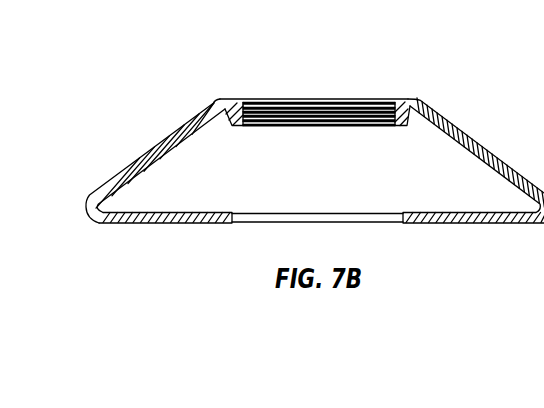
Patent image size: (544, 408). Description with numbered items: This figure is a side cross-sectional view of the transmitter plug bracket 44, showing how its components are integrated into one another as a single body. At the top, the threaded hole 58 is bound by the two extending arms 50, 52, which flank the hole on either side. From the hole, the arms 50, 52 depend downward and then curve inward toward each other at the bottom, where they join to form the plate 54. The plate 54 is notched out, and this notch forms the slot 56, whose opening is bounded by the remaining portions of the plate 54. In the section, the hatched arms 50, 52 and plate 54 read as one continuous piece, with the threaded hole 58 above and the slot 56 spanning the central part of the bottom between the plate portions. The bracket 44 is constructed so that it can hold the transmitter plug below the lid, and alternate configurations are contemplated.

The bracket 44 is at (470, 57).
The arm 50 is at (181, 127).
The arm 52 is at (461, 131).
The plate 54 is at (158, 212).
The slot 56 is at (270, 223).
The threaded hole 58 is at (340, 101).